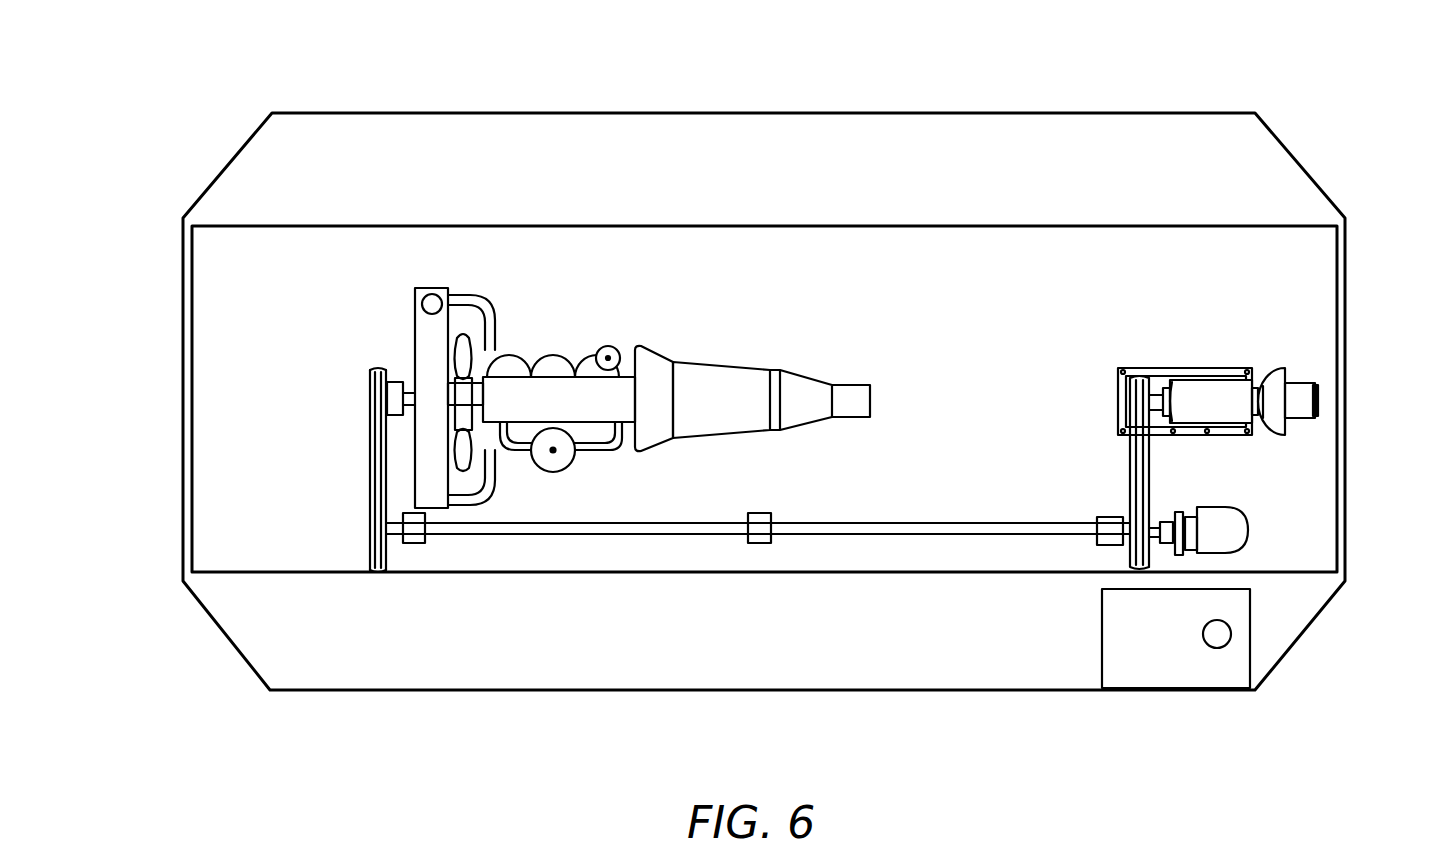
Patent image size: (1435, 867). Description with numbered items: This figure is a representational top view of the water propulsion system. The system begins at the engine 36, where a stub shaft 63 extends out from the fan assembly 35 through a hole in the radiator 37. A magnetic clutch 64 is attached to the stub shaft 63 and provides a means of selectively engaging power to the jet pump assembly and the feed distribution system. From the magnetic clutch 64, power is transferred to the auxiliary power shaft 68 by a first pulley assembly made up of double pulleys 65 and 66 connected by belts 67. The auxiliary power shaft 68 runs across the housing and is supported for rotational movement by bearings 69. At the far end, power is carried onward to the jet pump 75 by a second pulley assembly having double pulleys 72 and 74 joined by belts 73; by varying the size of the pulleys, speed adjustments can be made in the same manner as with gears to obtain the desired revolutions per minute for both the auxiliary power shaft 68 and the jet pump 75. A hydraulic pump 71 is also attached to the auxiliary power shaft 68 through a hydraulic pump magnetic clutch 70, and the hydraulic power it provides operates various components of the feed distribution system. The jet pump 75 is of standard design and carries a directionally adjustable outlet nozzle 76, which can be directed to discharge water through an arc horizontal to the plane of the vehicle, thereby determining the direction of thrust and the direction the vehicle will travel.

The fan assembly 35 is at (476, 462).
The engine 36 is at (552, 347).
The radiator 37 is at (430, 288).
The stub shaft 63 is at (392, 378).
The magnetic clutch 64 is at (410, 382).
The double pulley 65 is at (368, 392).
The double pulley 66 is at (368, 520).
The belts 67 is at (368, 460).
The auxiliary power shaft 68 is at (562, 537).
The bearings 69 is at (412, 547).
The hydraulic pump magnetic clutch 70 is at (1168, 516).
The hydraulic pump 71 is at (1258, 535).
The double pulley 72 is at (1128, 503).
The belts 73 is at (1128, 474).
The double pulley 74 is at (1121, 397).
The jet pump 75 is at (1218, 393).
The directionally adjustable outlet nozzle 76 is at (1319, 401).